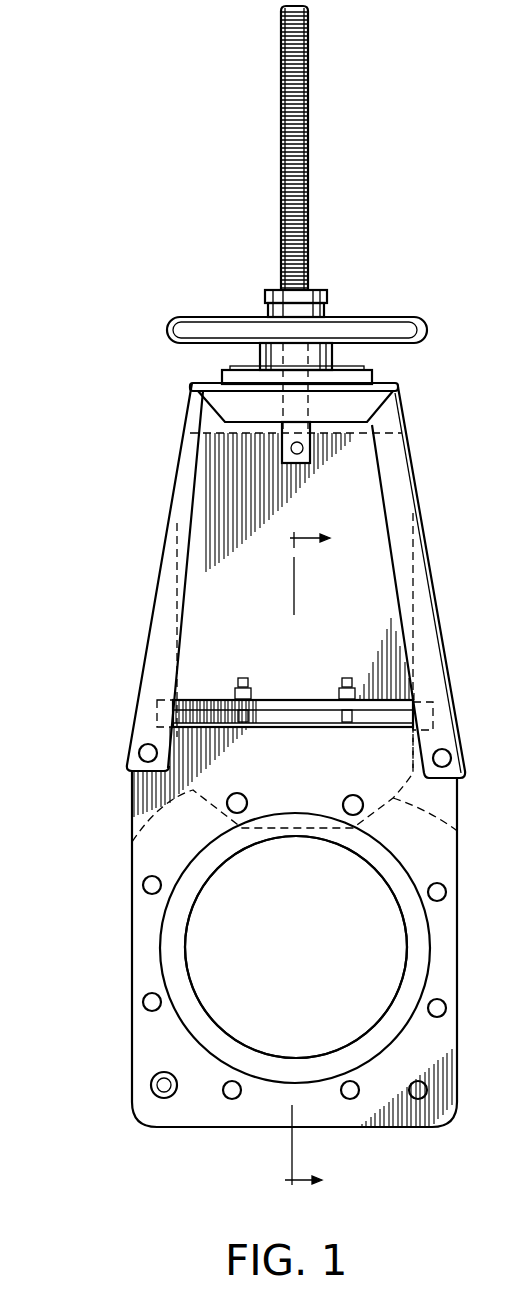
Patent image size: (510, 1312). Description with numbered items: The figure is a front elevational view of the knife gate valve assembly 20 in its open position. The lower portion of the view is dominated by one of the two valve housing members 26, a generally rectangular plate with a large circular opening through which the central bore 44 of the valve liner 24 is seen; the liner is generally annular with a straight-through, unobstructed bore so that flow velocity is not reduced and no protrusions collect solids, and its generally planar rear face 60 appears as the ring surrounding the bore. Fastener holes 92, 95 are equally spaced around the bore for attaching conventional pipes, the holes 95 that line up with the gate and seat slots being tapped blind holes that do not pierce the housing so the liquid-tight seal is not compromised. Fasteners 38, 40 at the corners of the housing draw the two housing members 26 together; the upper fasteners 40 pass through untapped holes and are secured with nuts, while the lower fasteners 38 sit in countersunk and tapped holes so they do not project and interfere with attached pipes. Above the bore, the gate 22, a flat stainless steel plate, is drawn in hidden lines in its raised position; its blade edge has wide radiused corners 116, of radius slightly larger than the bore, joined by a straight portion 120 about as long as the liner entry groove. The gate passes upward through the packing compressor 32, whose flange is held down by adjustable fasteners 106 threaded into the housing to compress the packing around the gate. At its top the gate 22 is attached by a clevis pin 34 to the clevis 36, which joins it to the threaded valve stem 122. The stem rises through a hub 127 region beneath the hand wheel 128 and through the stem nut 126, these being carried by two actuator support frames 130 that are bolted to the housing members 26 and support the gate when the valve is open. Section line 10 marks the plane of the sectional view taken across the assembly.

The section line 10- 10 is at (324, 861).
The gate valve assembly 20 is at (137, 617).
The gate 22 is at (368, 412).
The valve liner 24 is at (407, 957).
The valve housing member 26 is at (132, 870).
The packing compressor 32 is at (281, 700).
The clevis pin 34 is at (303, 449).
The clevis 36 is at (224, 421).
The fastener 38 is at (157, 1095).
The fastener 40 is at (150, 742).
The central bore 44 is at (203, 897).
The rear face 60 is at (180, 1020).
The fastener hole 92 is at (152, 993).
The fastener hole 95 is at (230, 1098).
The adjustable fastener 106 is at (243, 676).
The wide radiused corner 116 is at (133, 842).
The straight portion 120 is at (333, 832).
The threaded valve stem 122 is at (310, 175).
The stem nut 126 is at (328, 298).
The handwheel hub 127 is at (334, 355).
The hand wheel 128 is at (407, 317).
The actuator support frame 130 is at (437, 610).